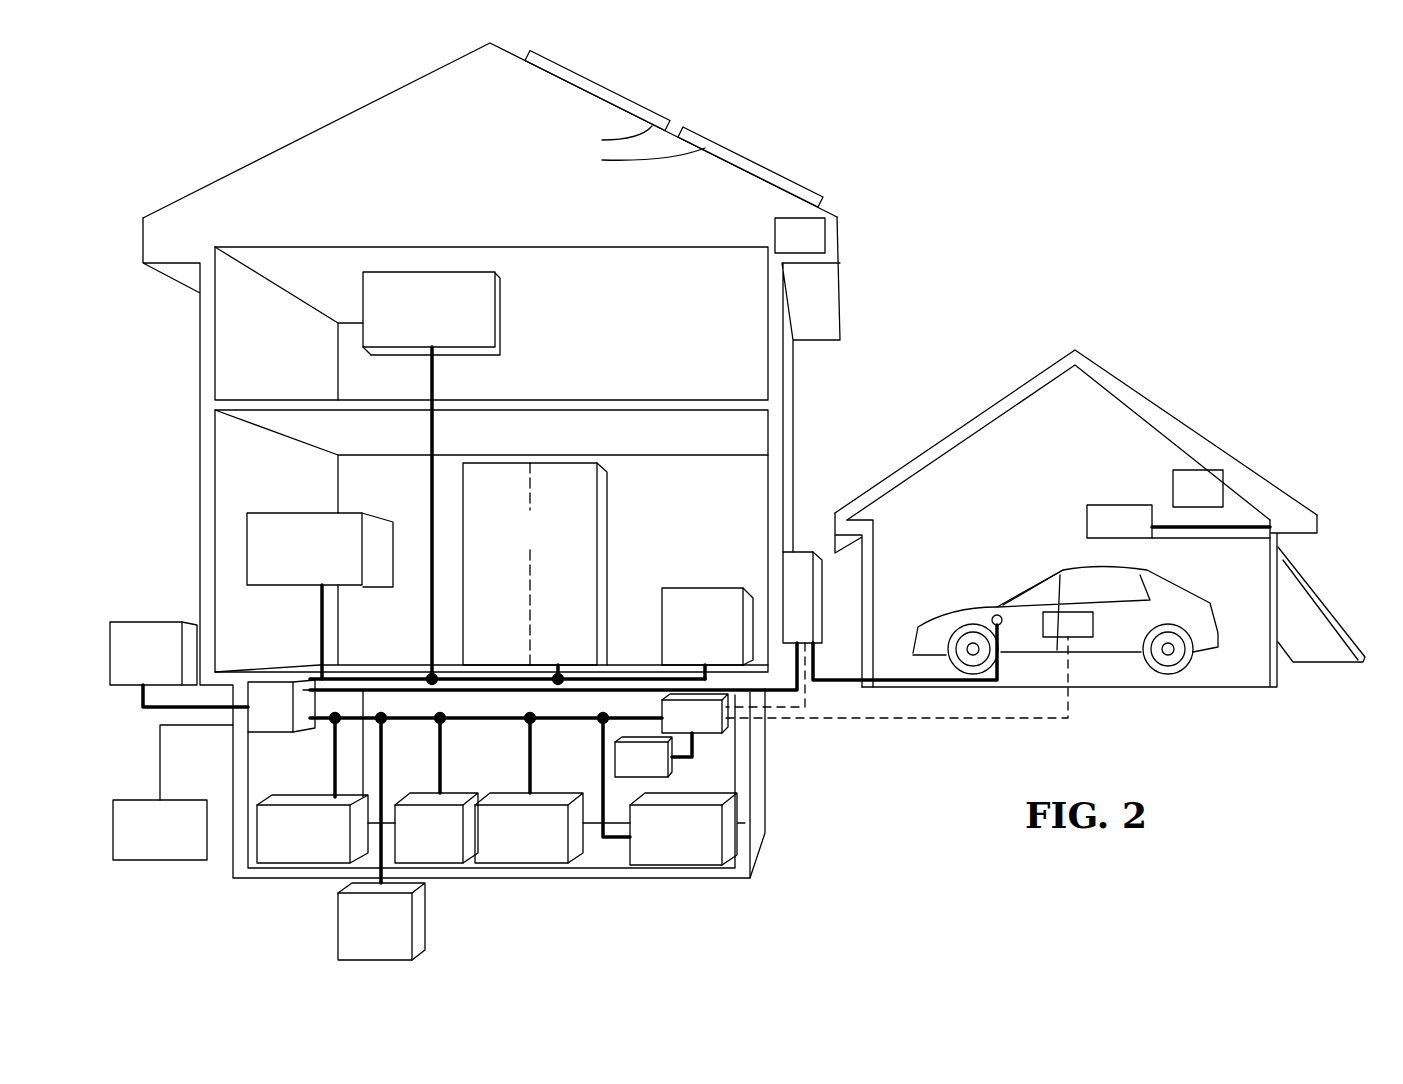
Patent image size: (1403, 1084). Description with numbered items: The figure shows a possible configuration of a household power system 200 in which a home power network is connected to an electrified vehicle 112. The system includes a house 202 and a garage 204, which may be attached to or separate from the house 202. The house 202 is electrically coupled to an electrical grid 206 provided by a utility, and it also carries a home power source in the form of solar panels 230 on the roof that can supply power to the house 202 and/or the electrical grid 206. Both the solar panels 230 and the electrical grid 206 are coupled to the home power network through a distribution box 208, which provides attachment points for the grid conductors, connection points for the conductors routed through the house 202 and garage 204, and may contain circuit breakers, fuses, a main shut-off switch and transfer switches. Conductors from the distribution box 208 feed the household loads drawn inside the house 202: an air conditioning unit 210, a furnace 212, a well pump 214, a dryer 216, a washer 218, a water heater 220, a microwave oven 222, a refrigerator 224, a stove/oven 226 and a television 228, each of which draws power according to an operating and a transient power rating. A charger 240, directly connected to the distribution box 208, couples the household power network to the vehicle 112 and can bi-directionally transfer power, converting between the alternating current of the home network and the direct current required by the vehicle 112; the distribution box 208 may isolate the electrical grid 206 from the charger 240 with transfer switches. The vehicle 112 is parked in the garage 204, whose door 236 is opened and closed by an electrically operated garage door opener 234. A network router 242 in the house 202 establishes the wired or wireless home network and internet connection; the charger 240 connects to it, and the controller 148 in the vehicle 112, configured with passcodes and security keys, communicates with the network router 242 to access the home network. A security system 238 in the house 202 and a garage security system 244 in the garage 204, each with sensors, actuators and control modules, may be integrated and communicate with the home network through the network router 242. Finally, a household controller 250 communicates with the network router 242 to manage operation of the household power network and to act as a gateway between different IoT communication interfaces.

The household power system 200 is at (1115, 122).
The house 202 is at (307, 135).
The garage 204 is at (1157, 404).
The electrical grid 206 is at (125, 862).
The distribution box 208 is at (265, 733).
The air conditioning unit 210 is at (172, 620).
The furnace 212 is at (302, 866).
The well pump 214 is at (336, 947).
The dryer 216 is at (440, 866).
The washer 218 is at (518, 866).
The water heater 220 is at (678, 866).
The microwave oven 222 is at (310, 513).
The refrigerator 224 is at (608, 533).
The stove/oven 226 is at (705, 588).
The television 228 is at (502, 306).
The solar panels 230 is at (612, 90).
The garage door opener 234 is at (1120, 505).
The door 236 is at (1330, 665).
The security system 238 is at (826, 233).
The charger 240 is at (796, 551).
The network router 242 is at (705, 734).
The garage security system 244 is at (1172, 487).
The household controller 250 is at (638, 778).
The vehicle 112 is at (1062, 571).
The controller 148 is at (1053, 635).